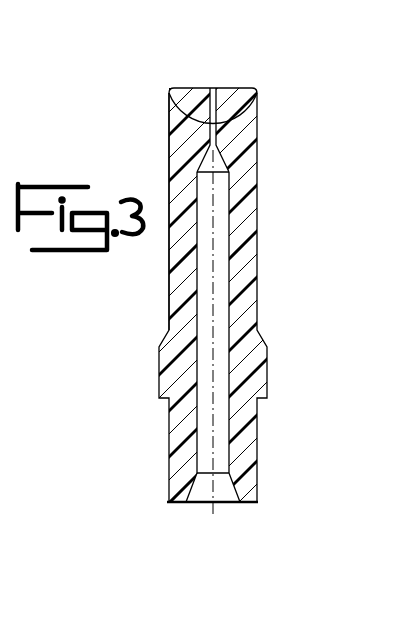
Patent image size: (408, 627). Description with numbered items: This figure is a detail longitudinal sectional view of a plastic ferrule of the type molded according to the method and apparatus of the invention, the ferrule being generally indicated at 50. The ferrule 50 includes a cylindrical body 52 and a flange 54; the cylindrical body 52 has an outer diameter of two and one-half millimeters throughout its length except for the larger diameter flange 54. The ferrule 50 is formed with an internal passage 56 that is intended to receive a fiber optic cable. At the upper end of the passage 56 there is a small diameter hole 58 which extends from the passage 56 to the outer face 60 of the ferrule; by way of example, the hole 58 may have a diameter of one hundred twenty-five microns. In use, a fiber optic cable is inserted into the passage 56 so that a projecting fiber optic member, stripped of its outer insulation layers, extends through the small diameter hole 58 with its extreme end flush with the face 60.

The ferrule 50 is at (263, 294).
The cylindrical body 52 is at (169, 144).
The flange 54 is at (188, 492).
The internal passage 56 is at (213, 230).
The small diameter hole 58 is at (231, 88).
The outer face 60 is at (178, 88).